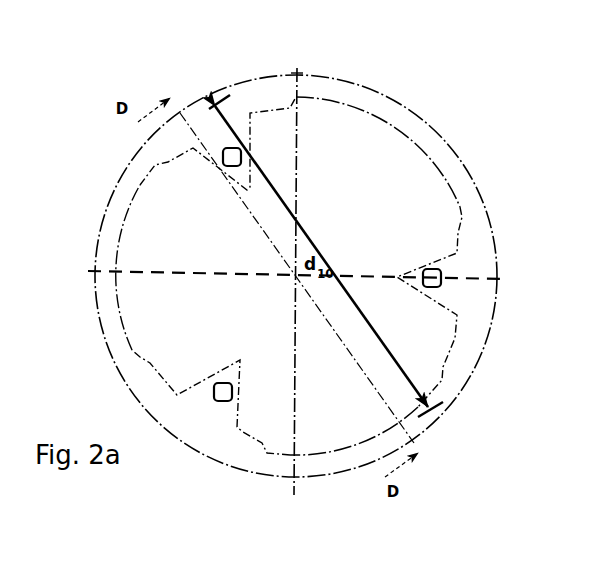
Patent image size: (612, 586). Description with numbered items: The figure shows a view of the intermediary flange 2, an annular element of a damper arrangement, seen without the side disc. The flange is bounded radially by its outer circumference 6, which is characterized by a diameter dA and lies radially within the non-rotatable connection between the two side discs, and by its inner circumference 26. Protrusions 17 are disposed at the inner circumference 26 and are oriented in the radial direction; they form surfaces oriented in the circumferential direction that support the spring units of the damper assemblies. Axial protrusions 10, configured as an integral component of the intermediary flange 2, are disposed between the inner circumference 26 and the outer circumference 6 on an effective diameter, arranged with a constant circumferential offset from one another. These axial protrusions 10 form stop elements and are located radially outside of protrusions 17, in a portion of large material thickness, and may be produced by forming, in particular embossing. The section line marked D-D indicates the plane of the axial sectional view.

The intermediary flange 2 is at (395, 77).
The outer circumference 6 is at (458, 142).
The axial protrusions 10 is at (223, 150).
The protrusions 17 is at (236, 134).
The inner circumference 26 is at (128, 326).